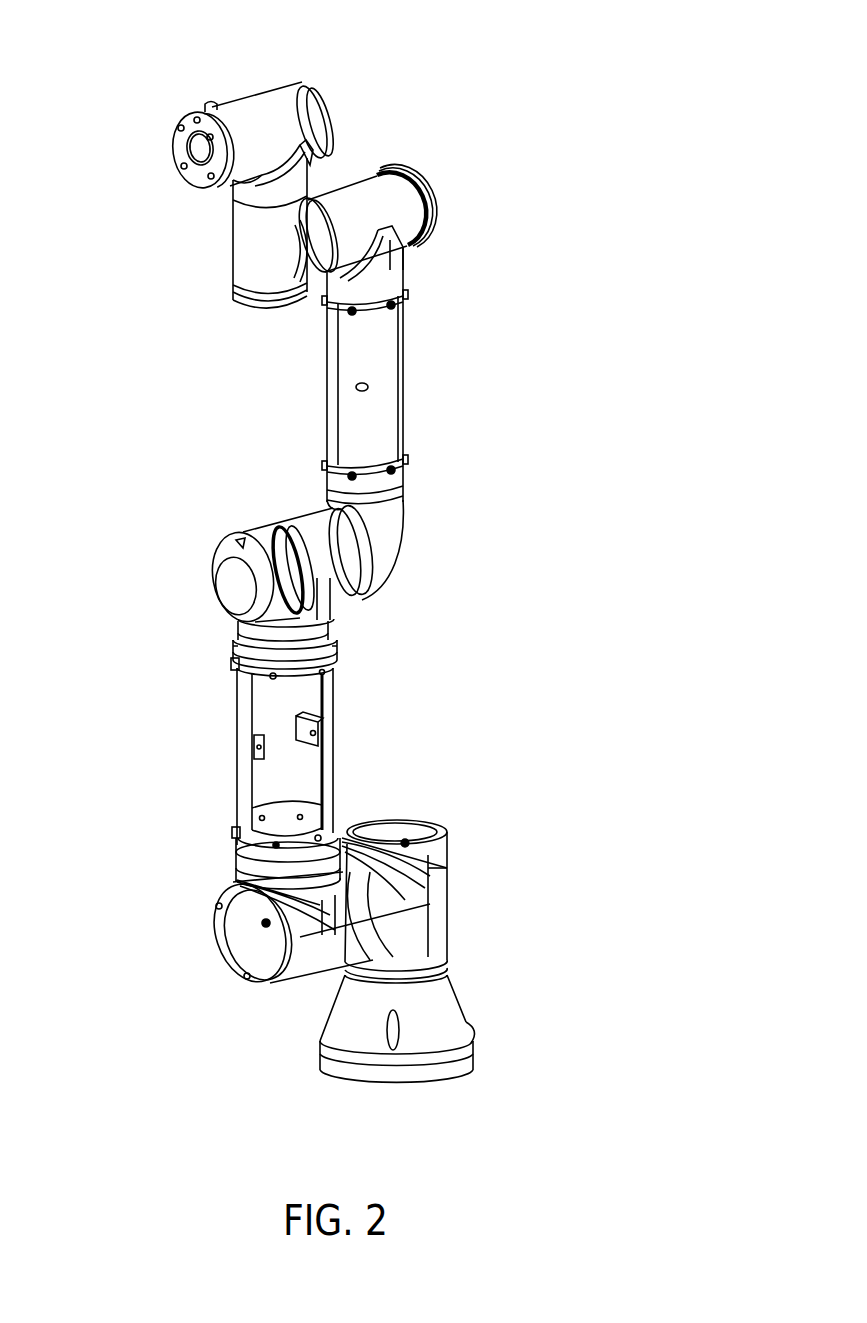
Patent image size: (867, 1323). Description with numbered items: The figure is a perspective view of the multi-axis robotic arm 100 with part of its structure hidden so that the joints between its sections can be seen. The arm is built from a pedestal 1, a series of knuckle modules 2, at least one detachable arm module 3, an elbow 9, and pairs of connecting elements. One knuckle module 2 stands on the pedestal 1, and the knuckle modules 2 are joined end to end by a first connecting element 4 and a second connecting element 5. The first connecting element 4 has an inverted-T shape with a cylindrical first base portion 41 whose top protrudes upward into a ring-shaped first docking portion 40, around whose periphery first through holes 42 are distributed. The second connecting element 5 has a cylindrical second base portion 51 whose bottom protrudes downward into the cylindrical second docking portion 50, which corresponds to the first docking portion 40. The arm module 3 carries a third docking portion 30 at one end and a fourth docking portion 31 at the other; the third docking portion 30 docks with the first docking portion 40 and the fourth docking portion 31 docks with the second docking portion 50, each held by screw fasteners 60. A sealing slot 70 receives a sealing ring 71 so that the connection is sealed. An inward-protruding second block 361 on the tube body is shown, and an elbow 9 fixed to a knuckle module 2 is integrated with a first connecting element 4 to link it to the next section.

The multi-axis robotic arm 100 is at (60, 40).
The pedestal 1 is at (455, 1048).
The knuckle module 2 is at (377, 203).
The arm module 3 is at (406, 352).
The first connecting element 4 is at (353, 836).
The second connecting element 5 is at (343, 651).
The elbow 9 is at (388, 527).
The third docking portion 30 is at (333, 812).
The fourth docking portion 31 is at (247, 669).
The first docking portion 40 is at (277, 844).
The first base portion 41 is at (430, 868).
The first through holes 42 is at (362, 838).
The second docking portion 50 is at (327, 671).
The second base portion 51 is at (245, 661).
The fastener 60 is at (236, 668).
The sealing slot 70 is at (343, 816).
The sealing ring 71 is at (275, 846).
The second block 361 is at (322, 723).